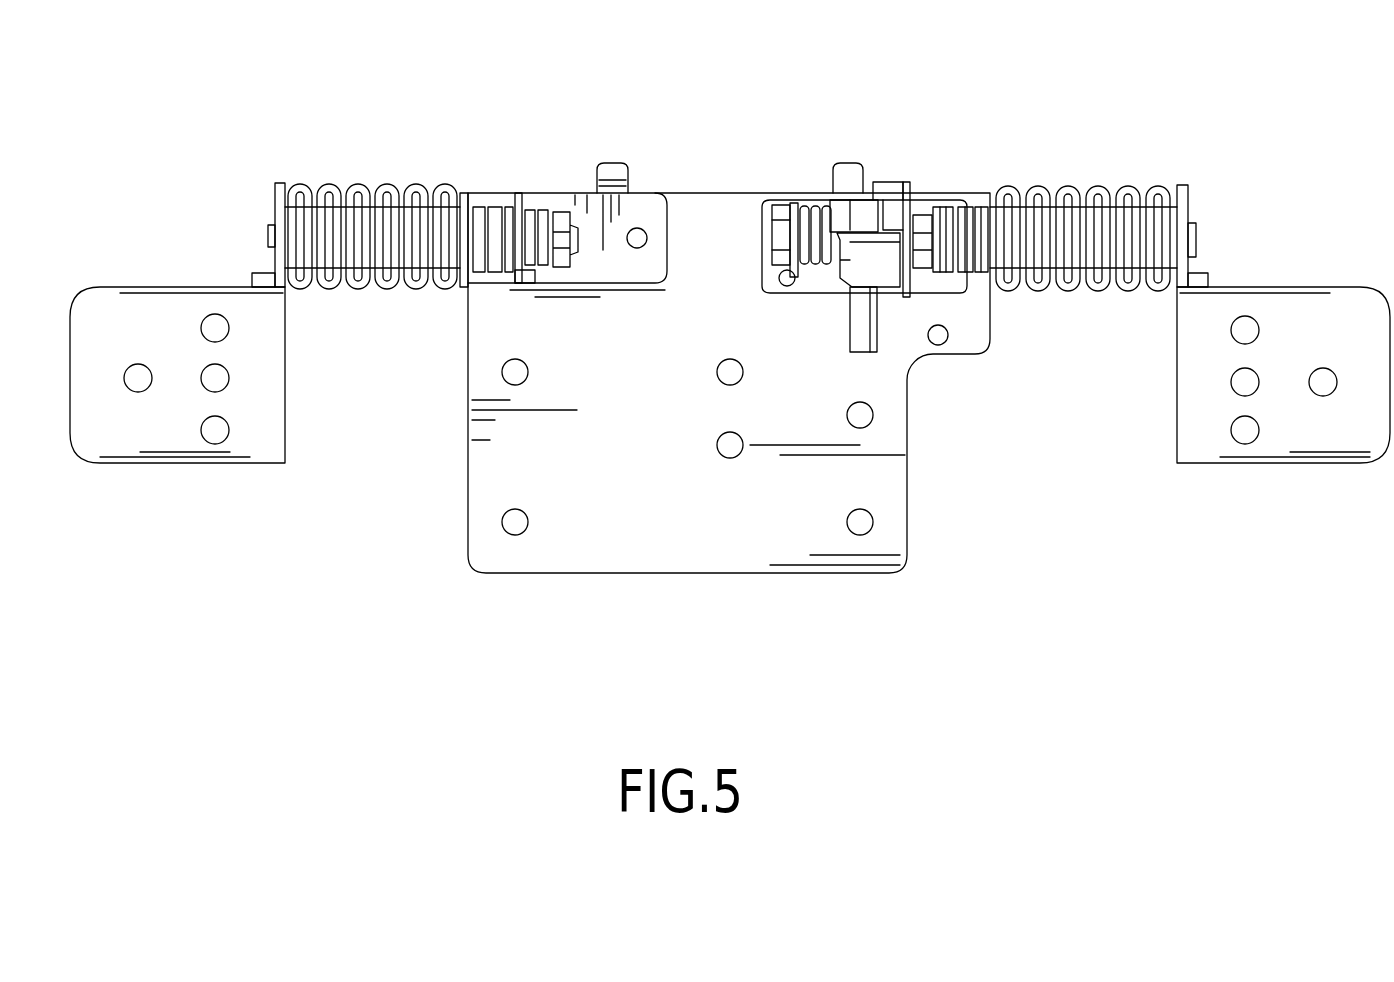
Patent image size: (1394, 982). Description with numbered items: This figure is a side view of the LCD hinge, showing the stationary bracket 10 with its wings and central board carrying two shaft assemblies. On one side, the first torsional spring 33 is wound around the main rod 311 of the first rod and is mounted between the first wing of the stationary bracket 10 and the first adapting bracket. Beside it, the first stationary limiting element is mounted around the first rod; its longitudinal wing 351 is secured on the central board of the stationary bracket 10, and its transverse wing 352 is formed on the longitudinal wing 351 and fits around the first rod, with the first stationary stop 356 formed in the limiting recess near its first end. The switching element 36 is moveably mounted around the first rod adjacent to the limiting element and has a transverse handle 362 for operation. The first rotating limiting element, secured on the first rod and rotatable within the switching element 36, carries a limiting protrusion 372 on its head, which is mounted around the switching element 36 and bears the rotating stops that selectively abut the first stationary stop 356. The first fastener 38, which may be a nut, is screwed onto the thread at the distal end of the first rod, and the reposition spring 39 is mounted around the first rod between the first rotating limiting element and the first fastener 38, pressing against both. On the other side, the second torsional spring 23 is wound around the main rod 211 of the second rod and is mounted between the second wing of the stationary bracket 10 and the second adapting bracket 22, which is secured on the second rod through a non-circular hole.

The stationary bracket 10 is at (636, 558).
The second adapting bracket 22 is at (131, 305).
The main rod 211 is at (345, 213).
The second torsional spring 23 is at (398, 277).
The first torsional spring 33 is at (1102, 192).
The main rod 311 is at (1187, 215).
The longitudinal wing 351 is at (940, 197).
The transverse wing 352 is at (907, 192).
The first stationary stop 356 is at (893, 212).
The switching element 36 is at (860, 215).
The limiting protrusion 372 is at (866, 272).
The handle 362 is at (868, 352).
The first fastener 38 is at (780, 217).
The reposition spring 39 is at (800, 229).